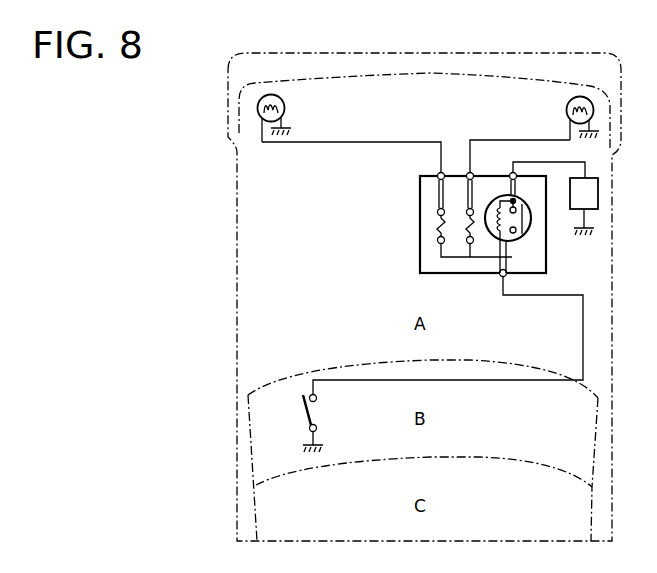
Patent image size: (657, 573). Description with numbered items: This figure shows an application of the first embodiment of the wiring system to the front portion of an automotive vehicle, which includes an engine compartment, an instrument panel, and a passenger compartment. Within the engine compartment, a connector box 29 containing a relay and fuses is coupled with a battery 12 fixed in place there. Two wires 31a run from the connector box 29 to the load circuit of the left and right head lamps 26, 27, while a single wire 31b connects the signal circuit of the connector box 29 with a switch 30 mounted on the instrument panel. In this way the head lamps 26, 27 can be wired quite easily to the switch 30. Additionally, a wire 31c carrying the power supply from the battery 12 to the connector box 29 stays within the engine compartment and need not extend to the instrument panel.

The left head lamp 26 is at (284, 119).
The right head lamp 27 is at (572, 119).
The wires 31a is at (384, 142).
The wire 31b is at (583, 323).
The wire 31c is at (546, 162).
The battery 12 is at (584, 206).
The connector box 29 is at (483, 225).
The switch 30 is at (319, 424).